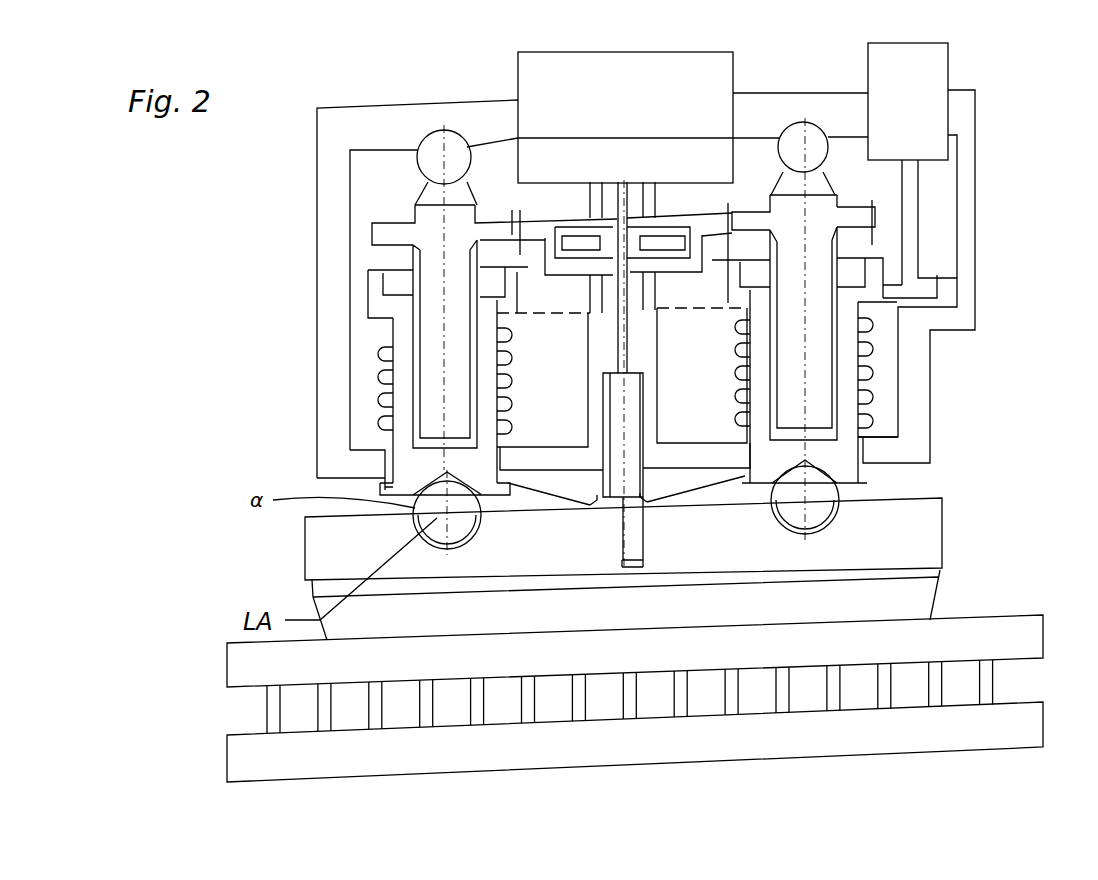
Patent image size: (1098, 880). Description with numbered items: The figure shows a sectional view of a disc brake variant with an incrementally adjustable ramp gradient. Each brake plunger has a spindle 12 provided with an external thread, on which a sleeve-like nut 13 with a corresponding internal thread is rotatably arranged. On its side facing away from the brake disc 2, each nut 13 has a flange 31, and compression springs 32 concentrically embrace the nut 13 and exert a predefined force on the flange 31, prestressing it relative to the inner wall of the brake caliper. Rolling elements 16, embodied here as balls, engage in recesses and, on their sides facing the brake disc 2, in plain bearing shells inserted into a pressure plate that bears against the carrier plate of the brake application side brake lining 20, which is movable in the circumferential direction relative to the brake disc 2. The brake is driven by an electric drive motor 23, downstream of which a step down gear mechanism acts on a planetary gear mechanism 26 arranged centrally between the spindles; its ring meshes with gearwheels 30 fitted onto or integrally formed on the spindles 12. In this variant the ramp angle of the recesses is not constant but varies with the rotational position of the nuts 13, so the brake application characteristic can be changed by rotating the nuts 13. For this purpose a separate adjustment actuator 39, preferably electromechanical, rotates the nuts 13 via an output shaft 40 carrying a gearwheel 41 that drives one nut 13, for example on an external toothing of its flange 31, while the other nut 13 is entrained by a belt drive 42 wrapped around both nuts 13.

The brake disc 2 is at (1027, 640).
The spindle 12 is at (435, 307).
The nut 13 is at (843, 420).
The rolling elements 16 is at (843, 497).
The brake lining 20 is at (943, 572).
The electric drive motor 23 is at (663, 73).
The planetary gear mechanism 26 is at (690, 213).
The gearwheels 30 is at (910, 233).
The flange 31 is at (872, 265).
The compression springs 32 is at (873, 350).
The adjustment actuator 39 is at (925, 73).
The output shaft 40 is at (878, 212).
The gearwheel 41 is at (923, 292).
The belt drive 42 is at (567, 312).